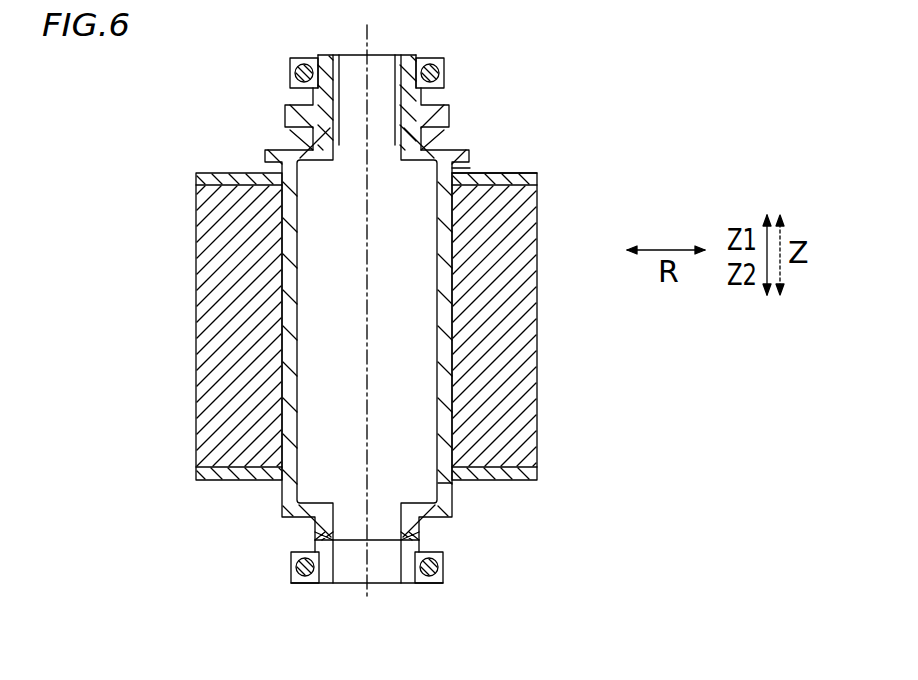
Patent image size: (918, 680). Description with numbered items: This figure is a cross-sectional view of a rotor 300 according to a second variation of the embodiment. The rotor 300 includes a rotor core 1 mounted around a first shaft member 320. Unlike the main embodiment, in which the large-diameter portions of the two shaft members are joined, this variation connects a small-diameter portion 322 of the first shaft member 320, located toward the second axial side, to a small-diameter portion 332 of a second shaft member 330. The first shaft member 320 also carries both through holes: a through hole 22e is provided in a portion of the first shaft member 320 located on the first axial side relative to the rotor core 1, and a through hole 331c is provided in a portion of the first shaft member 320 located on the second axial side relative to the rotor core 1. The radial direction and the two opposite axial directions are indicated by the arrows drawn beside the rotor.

The rotor 300 is at (203, 74).
The rotor core 1 is at (510, 377).
The through hole 22e is at (467, 168).
The first shaft member 320 is at (300, 265).
The small-diameter portion 322 is at (313, 525).
The second shaft member 330 is at (338, 568).
The through hole 331c is at (457, 486).
The small-diameter portion 332 is at (325, 588).